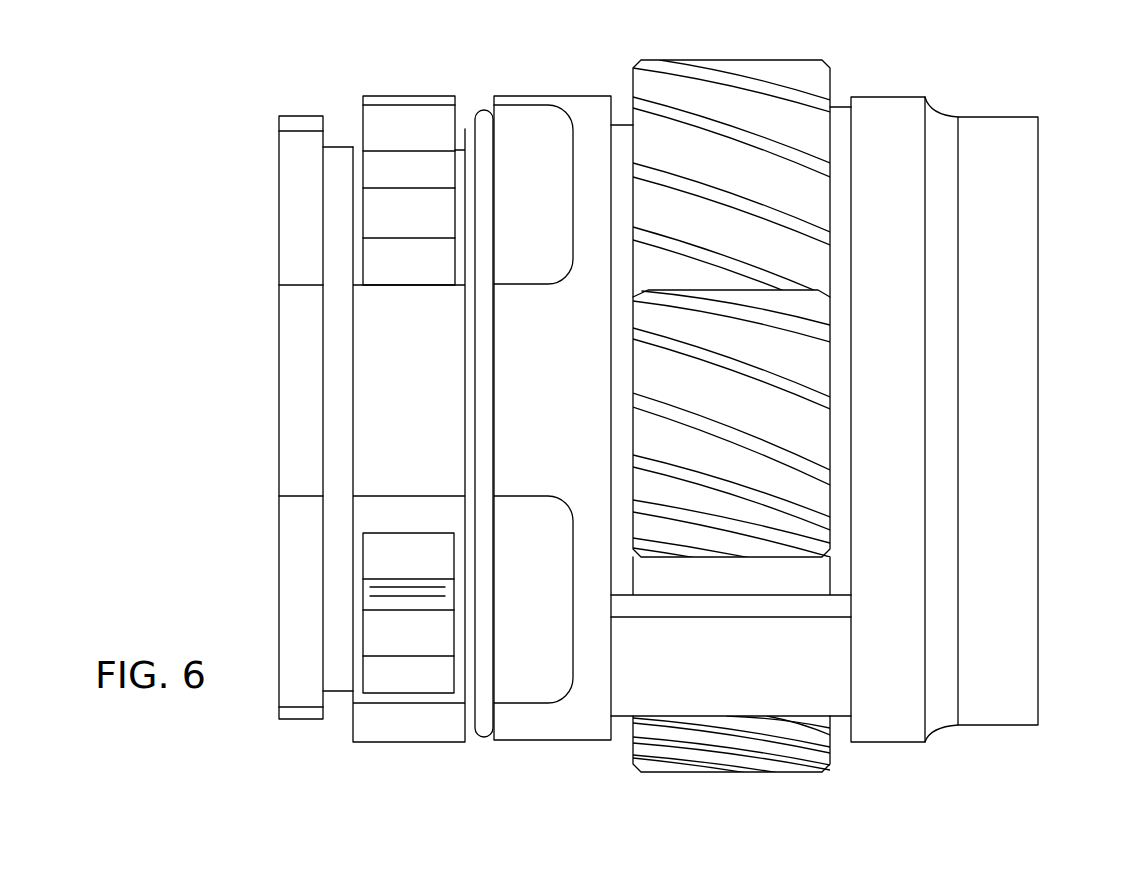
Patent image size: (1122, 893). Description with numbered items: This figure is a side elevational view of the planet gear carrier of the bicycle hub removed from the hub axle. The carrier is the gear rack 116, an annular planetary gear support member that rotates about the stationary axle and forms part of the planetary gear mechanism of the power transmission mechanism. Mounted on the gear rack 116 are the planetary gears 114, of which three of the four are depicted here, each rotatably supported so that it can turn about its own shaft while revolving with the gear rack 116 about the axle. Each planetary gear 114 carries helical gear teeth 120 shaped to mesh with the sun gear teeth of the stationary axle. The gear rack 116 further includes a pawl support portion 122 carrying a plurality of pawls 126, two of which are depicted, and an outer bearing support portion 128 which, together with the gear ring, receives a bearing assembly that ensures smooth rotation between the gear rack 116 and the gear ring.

The planetary gear 114 is at (780, 77).
The gear rack 116 is at (622, 26).
The helical gear teeth 120 is at (800, 236).
The pawl support portion 122 is at (383, 362).
The pawl 126 is at (399, 128).
The outer bearing support portion 128 is at (941, 130).